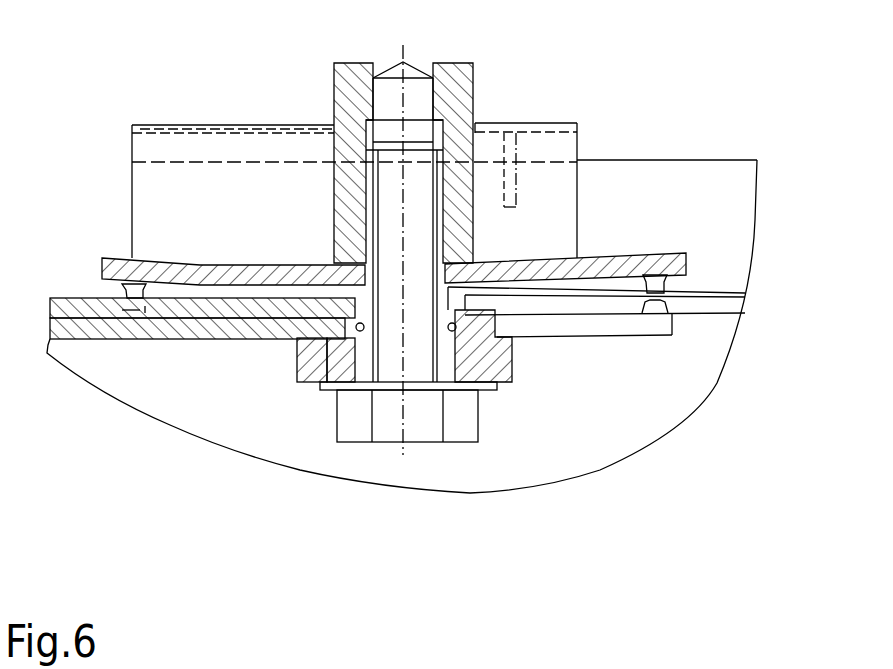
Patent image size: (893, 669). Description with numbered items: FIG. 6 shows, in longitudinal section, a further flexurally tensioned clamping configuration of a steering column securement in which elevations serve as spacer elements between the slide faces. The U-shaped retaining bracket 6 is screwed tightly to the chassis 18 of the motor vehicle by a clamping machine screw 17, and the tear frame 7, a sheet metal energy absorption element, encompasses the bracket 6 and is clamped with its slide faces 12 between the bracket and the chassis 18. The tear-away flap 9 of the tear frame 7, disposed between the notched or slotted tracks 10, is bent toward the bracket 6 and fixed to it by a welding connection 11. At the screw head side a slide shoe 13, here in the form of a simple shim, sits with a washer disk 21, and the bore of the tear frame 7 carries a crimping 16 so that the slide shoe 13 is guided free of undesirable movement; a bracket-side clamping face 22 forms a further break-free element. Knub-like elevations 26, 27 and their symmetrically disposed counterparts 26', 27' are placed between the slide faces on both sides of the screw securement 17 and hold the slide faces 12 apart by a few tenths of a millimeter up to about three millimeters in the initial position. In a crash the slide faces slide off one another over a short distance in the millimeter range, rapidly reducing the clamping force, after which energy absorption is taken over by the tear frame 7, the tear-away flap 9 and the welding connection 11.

The retaining bracket 6 is at (626, 183).
The tear frame 7 is at (309, 143).
The tear-away flap 9 is at (497, 127).
The notched or slotted tracks 10 is at (133, 128).
The welding connection 11 is at (511, 212).
The slide faces 12 is at (668, 282).
The slide shoe 13 is at (317, 357).
The crimping 16 is at (452, 327).
The clamping machine screw 17 is at (428, 188).
The chassis 18 is at (358, 91).
The washer disk 21 is at (463, 385).
The bracket-side clamping face 22 is at (327, 338).
The elevation 26 is at (744, 336).
The elevation 26' is at (722, 156).
The elevation 27 is at (90, 378).
The elevation 27' is at (175, 166).